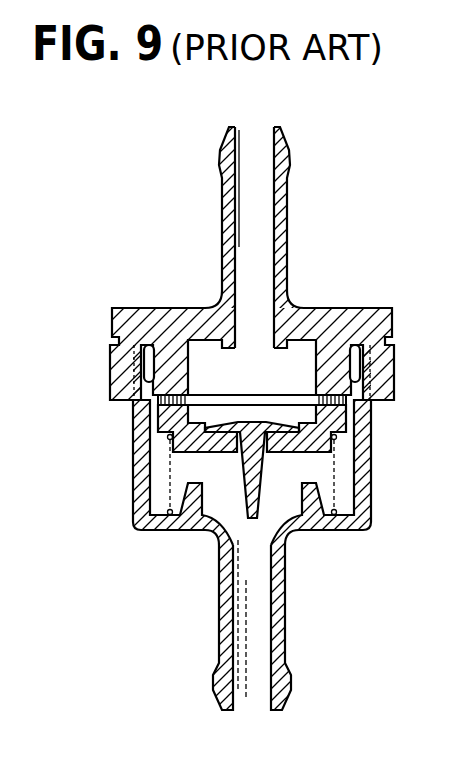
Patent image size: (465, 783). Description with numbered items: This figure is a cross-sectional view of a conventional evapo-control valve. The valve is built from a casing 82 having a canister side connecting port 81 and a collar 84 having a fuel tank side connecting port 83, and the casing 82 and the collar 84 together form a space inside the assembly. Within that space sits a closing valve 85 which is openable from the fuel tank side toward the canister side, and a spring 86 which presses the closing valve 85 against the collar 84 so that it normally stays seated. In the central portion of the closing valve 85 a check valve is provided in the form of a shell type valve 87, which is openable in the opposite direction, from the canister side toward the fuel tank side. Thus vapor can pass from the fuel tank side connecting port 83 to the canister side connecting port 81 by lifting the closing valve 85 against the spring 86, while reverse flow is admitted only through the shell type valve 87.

The canister side connecting port 81 is at (223, 610).
The casing 82 is at (116, 362).
The fuel tank side connecting port 83 is at (289, 219).
The collar 84 is at (160, 306).
The closing valve 85 is at (158, 430).
The spring 86 is at (148, 513).
The shell type valve 87 is at (235, 470).